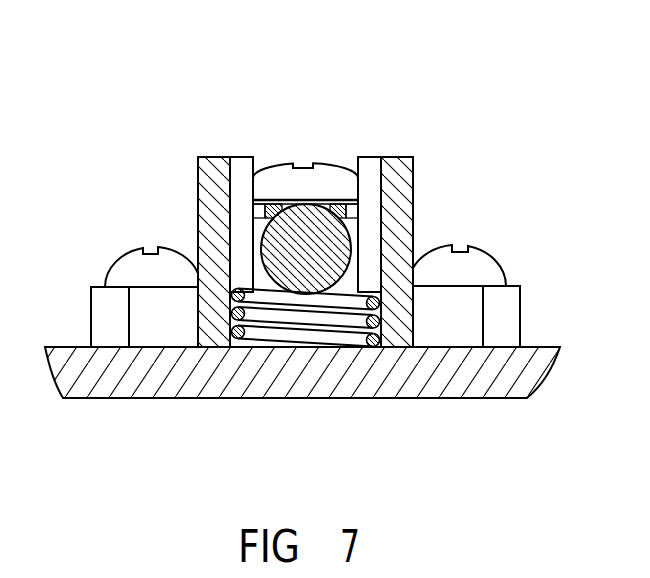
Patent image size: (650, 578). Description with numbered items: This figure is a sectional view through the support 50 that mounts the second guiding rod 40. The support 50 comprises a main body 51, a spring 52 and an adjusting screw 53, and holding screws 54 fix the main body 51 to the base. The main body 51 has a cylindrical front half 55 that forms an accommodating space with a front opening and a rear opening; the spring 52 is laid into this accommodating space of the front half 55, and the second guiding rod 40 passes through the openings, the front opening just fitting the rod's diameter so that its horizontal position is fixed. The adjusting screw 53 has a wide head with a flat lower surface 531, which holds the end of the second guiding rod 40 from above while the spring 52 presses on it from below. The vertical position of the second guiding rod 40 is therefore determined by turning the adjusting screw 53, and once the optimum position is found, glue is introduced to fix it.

The second guiding rod 40 is at (320, 250).
The support 50 is at (276, 239).
The main body 51 is at (205, 190).
The spring 52 is at (297, 337).
The adjusting screw 53 is at (287, 180).
The flat lower surface 531 is at (309, 207).
The holding screws 54 is at (483, 258).
The cylindrical front half 55 is at (370, 183).